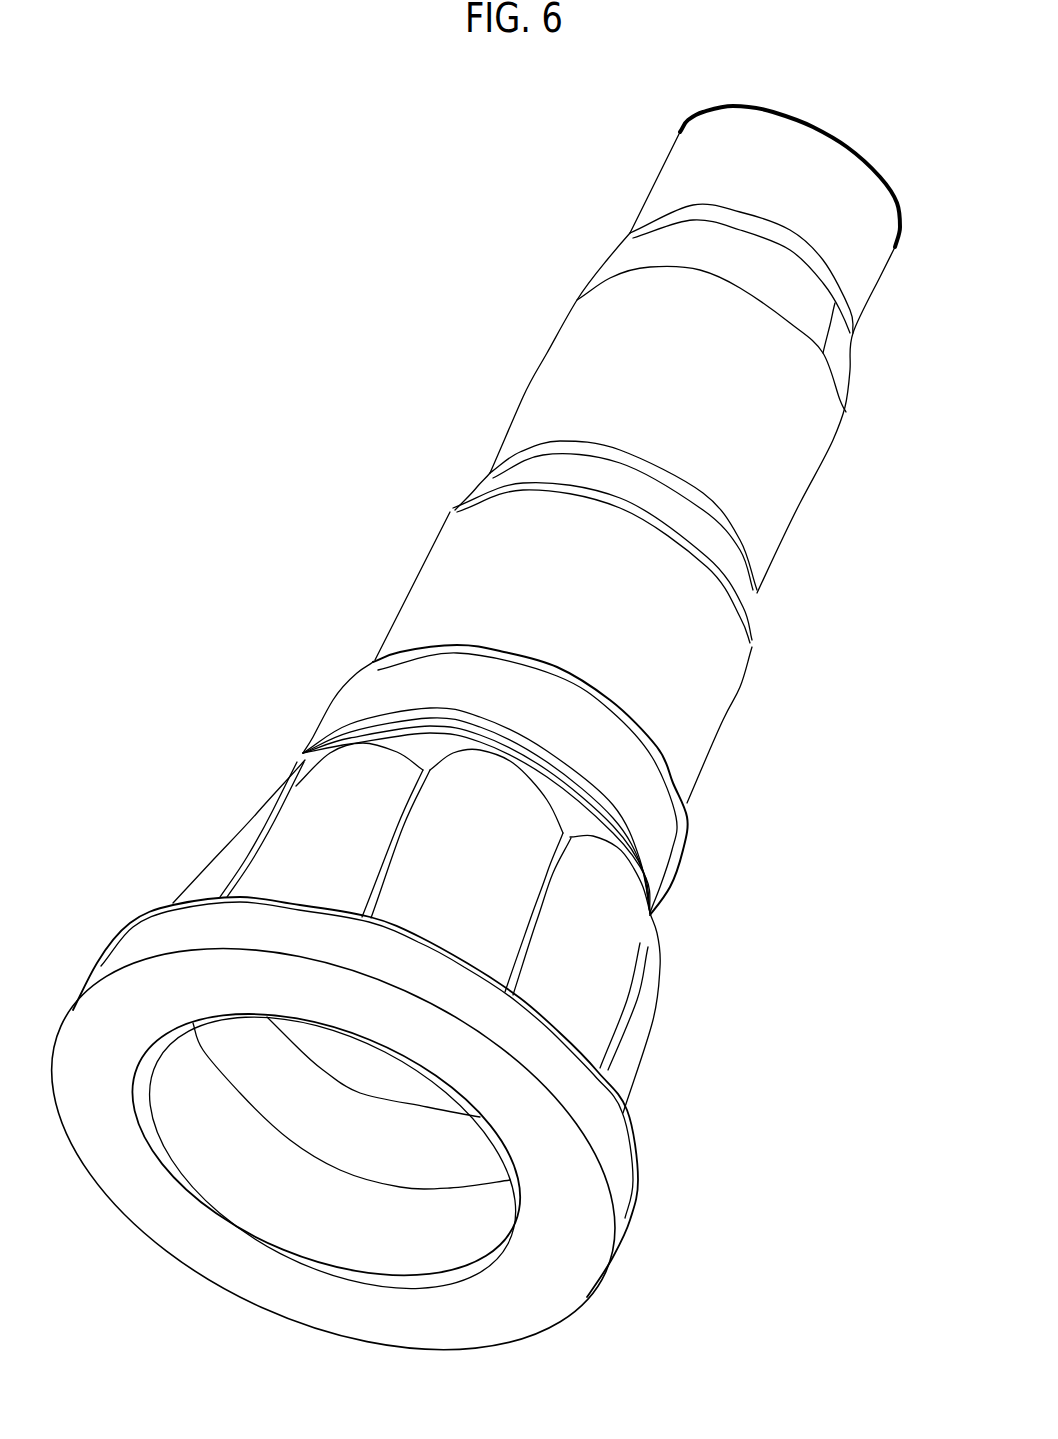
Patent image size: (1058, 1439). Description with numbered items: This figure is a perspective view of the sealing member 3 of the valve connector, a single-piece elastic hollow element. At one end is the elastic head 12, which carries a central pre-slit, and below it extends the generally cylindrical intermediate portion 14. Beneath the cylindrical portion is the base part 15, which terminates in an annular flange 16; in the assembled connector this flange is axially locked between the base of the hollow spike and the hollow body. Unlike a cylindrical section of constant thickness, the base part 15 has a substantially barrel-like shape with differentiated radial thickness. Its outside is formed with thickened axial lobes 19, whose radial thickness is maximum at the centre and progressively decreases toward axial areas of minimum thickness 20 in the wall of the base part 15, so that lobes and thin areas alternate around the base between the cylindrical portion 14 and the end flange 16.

The sealing member 3 is at (283, 331).
The elastic head 12 is at (813, 127).
The cylindrical intermediate portion 14 is at (780, 500).
The base part 15 is at (664, 1068).
The annular flange 16 is at (573, 1292).
The thickened axial lobes 19 is at (383, 750).
The axial areas of minimum thickness 20 is at (390, 820).